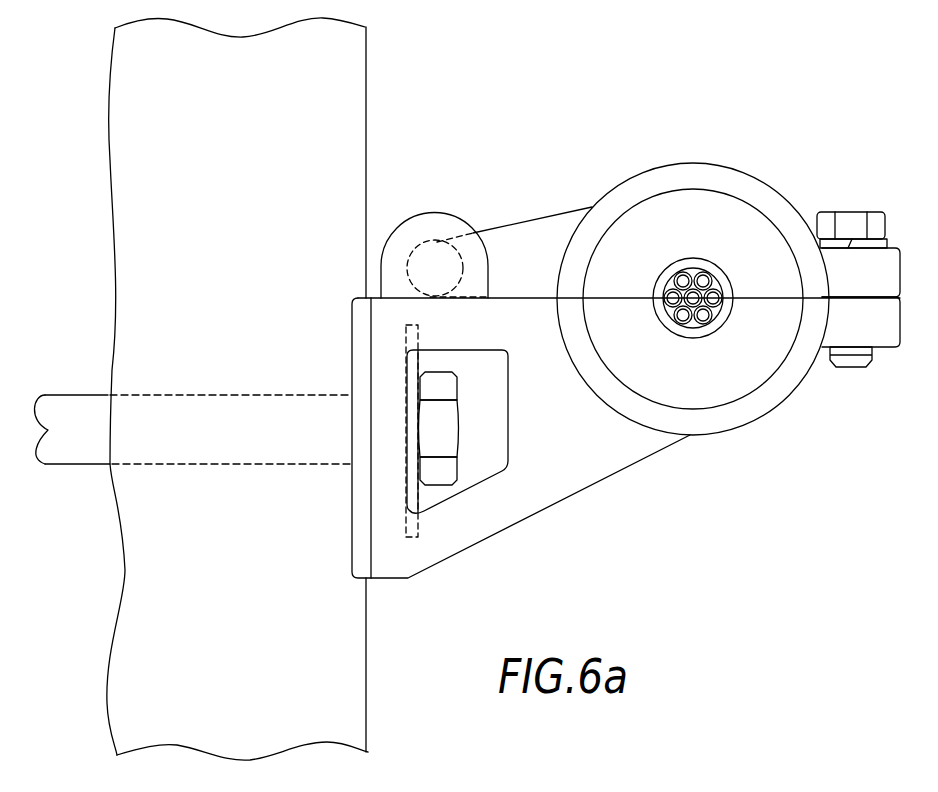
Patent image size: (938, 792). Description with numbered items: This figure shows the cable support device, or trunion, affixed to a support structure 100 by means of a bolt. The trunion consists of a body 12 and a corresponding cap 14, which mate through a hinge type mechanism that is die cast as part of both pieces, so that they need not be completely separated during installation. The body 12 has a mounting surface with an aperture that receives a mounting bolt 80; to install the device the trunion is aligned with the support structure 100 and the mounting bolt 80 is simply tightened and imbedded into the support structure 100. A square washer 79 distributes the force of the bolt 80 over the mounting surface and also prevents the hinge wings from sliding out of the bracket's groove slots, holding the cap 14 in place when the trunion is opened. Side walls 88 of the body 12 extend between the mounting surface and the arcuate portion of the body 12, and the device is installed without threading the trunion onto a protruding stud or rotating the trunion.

The body 12 is at (742, 413).
The cap 14 is at (700, 172).
The square washer 79 is at (413, 492).
The mounting bolt 80 is at (445, 437).
The side walls 88 is at (580, 472).
The support structure 100 is at (130, 147).